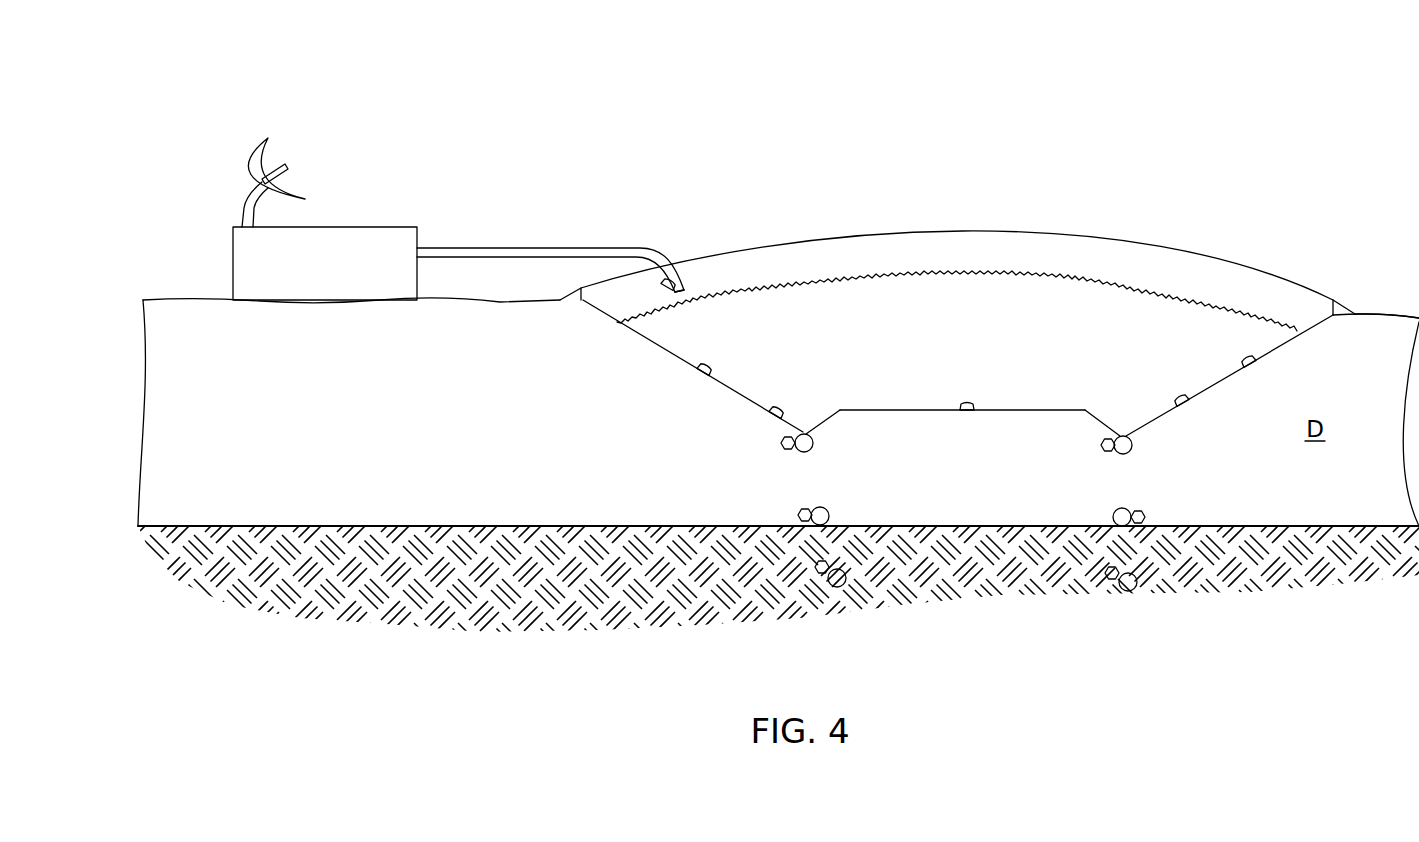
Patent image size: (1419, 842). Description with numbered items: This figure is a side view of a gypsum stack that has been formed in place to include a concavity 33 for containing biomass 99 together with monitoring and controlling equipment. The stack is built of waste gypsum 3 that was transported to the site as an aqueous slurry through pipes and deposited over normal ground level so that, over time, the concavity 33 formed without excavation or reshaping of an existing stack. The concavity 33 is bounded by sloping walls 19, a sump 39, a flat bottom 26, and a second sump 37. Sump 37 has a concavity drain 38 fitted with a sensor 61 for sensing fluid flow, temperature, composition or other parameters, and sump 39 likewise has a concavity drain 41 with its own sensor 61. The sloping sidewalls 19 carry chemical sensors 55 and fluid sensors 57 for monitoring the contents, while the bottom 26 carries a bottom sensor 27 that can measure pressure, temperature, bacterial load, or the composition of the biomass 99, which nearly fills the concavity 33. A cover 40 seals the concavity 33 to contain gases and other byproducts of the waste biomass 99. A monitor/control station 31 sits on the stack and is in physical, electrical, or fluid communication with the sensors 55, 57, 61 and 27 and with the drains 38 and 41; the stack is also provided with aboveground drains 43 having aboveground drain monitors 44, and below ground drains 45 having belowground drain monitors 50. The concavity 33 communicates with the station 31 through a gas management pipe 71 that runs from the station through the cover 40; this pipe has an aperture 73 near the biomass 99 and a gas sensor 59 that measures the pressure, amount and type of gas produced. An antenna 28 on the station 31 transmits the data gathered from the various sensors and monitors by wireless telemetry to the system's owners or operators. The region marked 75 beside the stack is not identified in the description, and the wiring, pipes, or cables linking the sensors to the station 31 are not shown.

The waste gypsum 3 is at (368, 510).
The sloping walls 19 is at (658, 346).
The flat bottom 26 is at (1048, 410).
The bottom sensor 27 is at (964, 401).
The antenna 28 is at (245, 172).
The monitor/control station 31 is at (233, 265).
The concavity 33 is at (772, 312).
The sump 37 is at (804, 420).
The concavity drain 38 is at (808, 434).
The sump 39 is at (1122, 418).
The cover 40 is at (1041, 228).
The concavity drain 41 is at (1125, 436).
The aboveground drains 43 is at (827, 512).
The aboveground drain monitors 44 is at (808, 508).
The below ground drains 45 is at (818, 572).
The belowground drain monitors 50 is at (845, 586).
The chemical sensors 55 is at (709, 364).
The fluid sensors 57 is at (772, 407).
The gas sensor 59 is at (660, 289).
The sensor 61 is at (784, 450).
The gas management pipe 71 is at (553, 248).
The aperture 73 is at (688, 294).
The ground surface 75 is at (1400, 315).
The biomass 99 is at (982, 294).